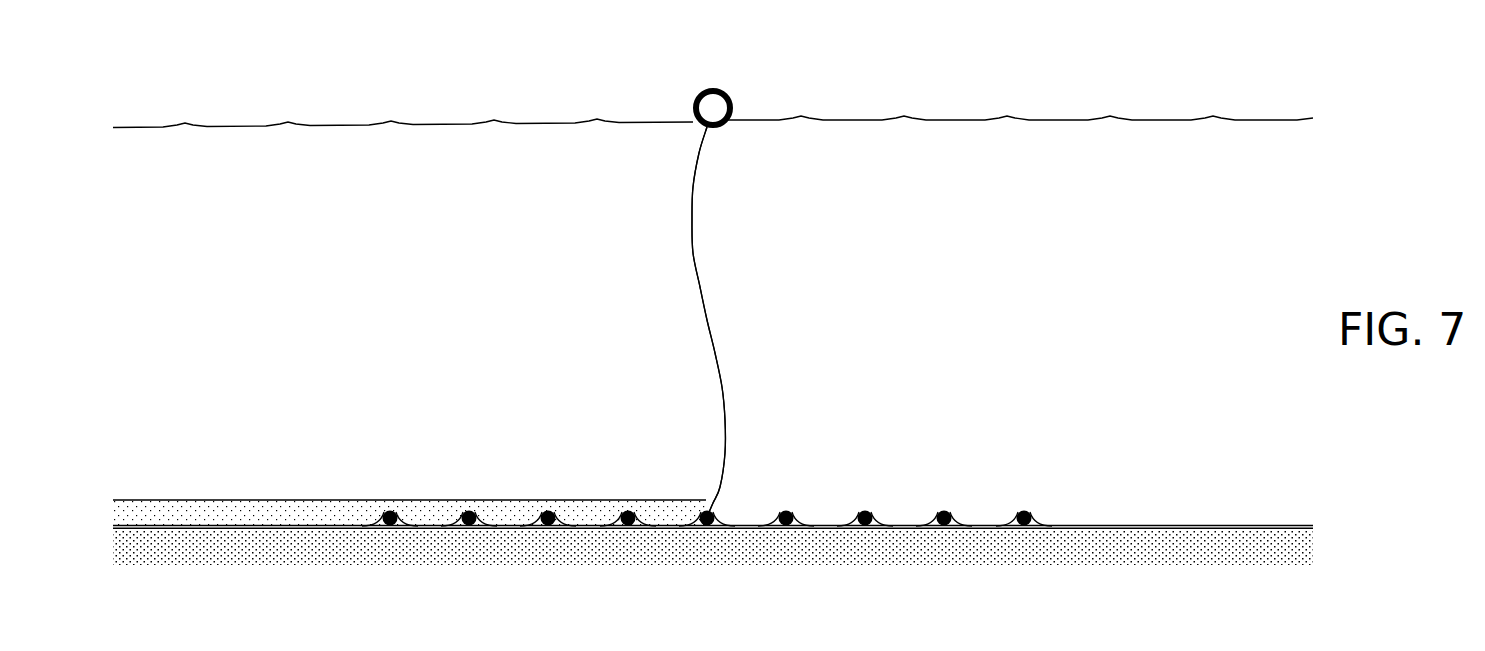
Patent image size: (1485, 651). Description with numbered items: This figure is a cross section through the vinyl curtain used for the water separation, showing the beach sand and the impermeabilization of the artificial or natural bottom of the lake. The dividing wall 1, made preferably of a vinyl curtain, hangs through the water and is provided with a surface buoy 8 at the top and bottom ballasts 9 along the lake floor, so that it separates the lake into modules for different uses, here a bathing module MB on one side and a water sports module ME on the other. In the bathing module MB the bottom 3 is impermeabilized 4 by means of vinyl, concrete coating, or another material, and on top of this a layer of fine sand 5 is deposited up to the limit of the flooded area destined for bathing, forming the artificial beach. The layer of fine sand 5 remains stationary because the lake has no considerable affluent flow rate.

The dividing wall 1 is at (688, 312).
The bottom 3 is at (130, 486).
The impermeabilization 4 is at (248, 514).
The fine sand 5 is at (353, 499).
The surface buoy 8 is at (683, 103).
The bottom ballast 9 is at (472, 494).
The bathing module MB is at (403, 192).
The water sports module ME is at (1002, 316).